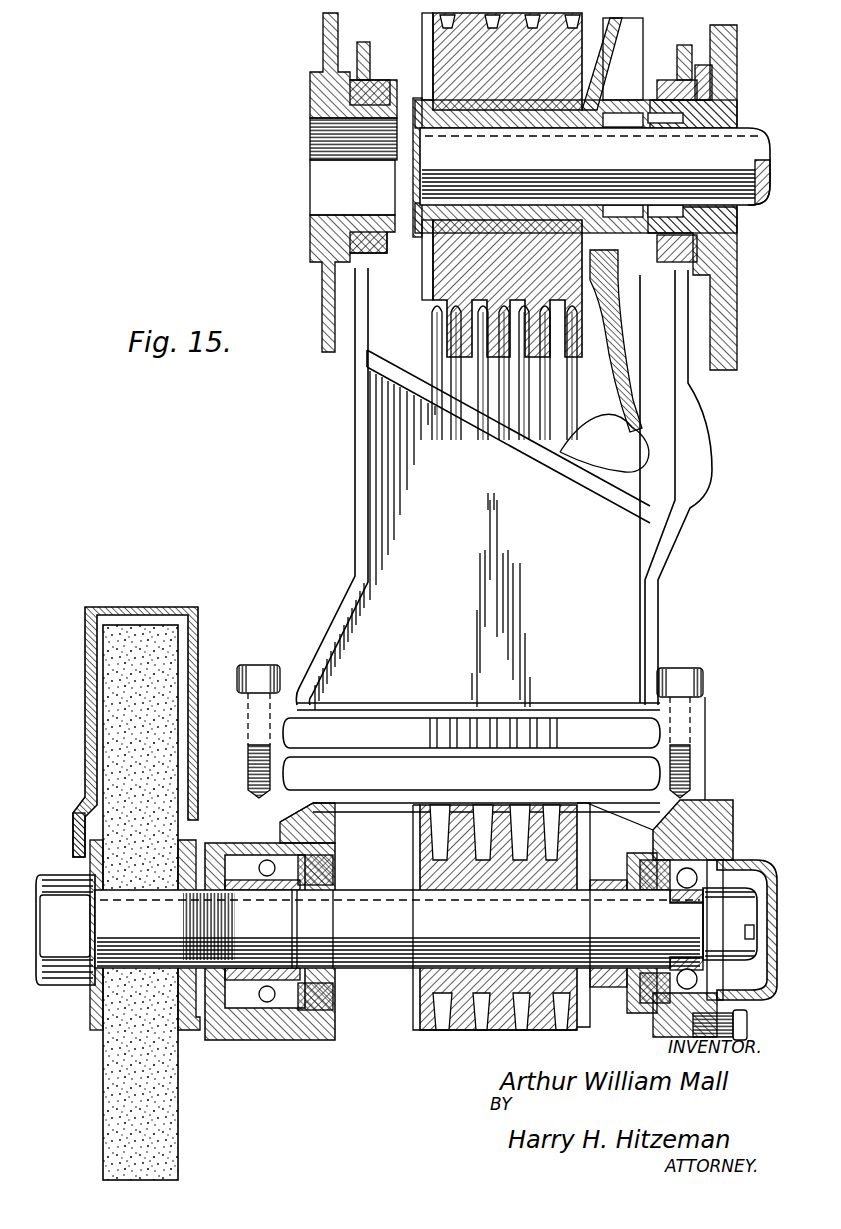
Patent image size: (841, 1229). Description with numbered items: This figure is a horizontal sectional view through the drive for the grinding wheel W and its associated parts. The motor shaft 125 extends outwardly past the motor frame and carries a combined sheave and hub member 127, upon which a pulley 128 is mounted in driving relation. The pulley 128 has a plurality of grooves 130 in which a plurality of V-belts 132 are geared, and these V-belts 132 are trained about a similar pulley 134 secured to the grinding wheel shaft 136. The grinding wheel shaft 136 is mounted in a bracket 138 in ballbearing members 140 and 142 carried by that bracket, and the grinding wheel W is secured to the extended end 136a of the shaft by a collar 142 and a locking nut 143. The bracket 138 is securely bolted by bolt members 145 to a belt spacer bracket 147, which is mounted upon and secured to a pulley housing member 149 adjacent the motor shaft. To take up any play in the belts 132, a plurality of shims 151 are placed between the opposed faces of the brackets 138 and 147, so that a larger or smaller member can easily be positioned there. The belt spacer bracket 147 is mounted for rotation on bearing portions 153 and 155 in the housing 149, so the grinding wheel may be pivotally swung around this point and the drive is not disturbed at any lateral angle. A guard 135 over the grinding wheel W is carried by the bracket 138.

The motor shaft 125 is at (747, 137).
The combined sheave and hub member 127 is at (565, 450).
The pulley 128 is at (532, 348).
The grooves 130 is at (470, 360).
The V-belts 132 is at (523, 1047).
The pulley 134 is at (433, 1027).
The guard 135 is at (85, 728).
The grinding wheel shaft 136 is at (380, 968).
The extended end of the shaft 136a is at (137, 963).
The bracket 138 is at (693, 827).
The ballbearing member 140 is at (268, 1025).
The ballbearing member / collar 142 is at (88, 842).
The locking nut 143 is at (57, 978).
The bolt members 145 is at (258, 665).
The belt spacer bracket 147 is at (660, 556).
The pulley housing member 149 is at (310, 80).
The shims 151 is at (700, 740).
The bearing portion 153 is at (365, 117).
The bearing portion 155 is at (735, 72).
The grinding wheel W is at (103, 1108).